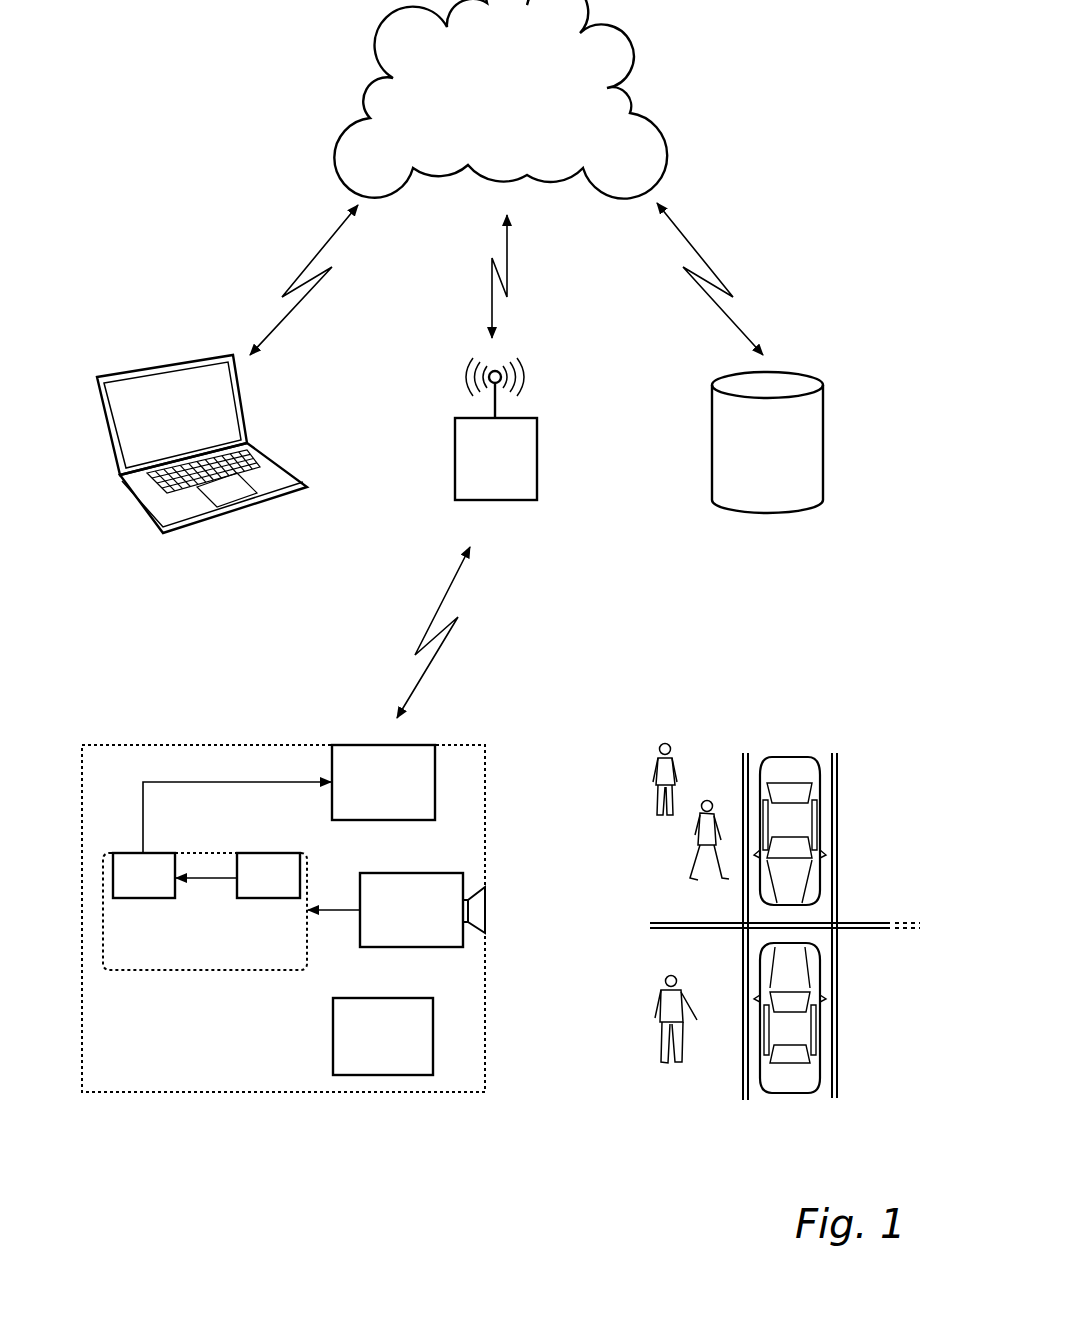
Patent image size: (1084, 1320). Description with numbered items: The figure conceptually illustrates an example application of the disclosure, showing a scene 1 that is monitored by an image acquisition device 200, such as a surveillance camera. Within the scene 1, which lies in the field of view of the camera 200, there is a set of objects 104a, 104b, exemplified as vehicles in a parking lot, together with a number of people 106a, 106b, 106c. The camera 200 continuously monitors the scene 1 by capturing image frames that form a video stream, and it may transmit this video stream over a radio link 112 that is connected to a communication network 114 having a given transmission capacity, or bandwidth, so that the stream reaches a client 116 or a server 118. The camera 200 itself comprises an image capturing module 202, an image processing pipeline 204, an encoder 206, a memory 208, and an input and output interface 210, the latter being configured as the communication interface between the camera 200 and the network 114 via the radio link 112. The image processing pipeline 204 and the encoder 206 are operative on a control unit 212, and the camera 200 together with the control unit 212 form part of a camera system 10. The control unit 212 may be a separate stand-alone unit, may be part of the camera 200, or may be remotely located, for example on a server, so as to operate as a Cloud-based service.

The camera system 10 is at (138, 716).
The communication network 114 is at (525, 103).
The client 116 is at (198, 430).
The radio link 112 is at (517, 477).
The server 118 is at (788, 462).
The image acquisition device 200 is at (152, 1075).
The input and output interface 210 is at (407, 795).
The control unit 212 is at (227, 948).
The encoder 206 is at (170, 892).
The image processing pipeline 204 is at (295, 892).
The image capturing module 202 is at (433, 922).
The memory 208 is at (407, 1045).
The scene 1 is at (628, 773).
The person 106a is at (671, 753).
The person 106b is at (697, 822).
The person 106c is at (651, 1015).
The object 104a is at (790, 831).
The object 104b is at (790, 1018).